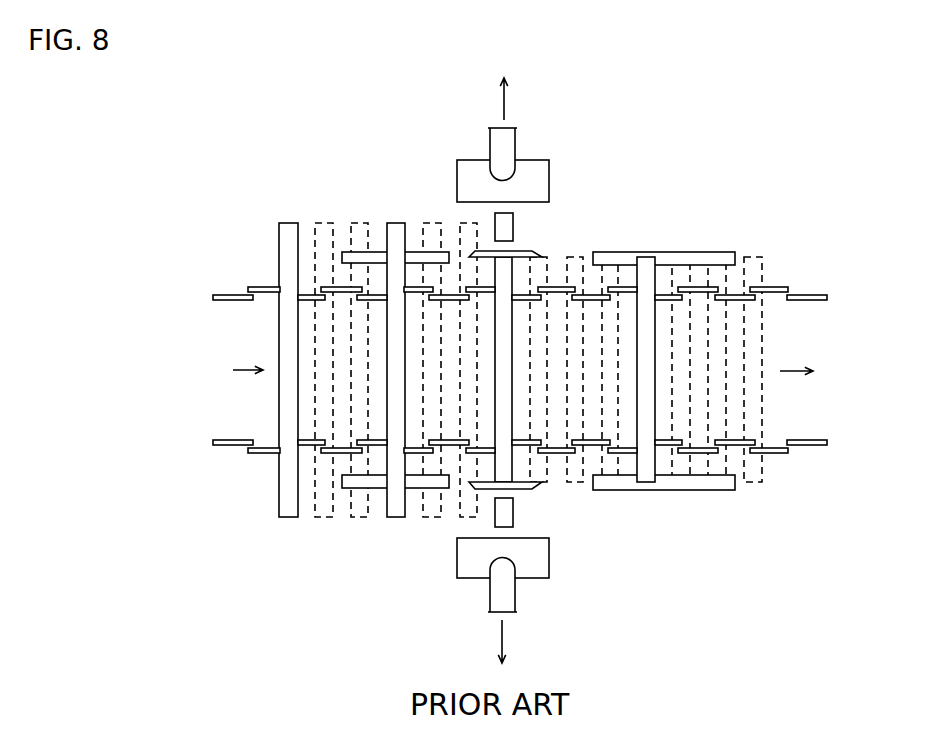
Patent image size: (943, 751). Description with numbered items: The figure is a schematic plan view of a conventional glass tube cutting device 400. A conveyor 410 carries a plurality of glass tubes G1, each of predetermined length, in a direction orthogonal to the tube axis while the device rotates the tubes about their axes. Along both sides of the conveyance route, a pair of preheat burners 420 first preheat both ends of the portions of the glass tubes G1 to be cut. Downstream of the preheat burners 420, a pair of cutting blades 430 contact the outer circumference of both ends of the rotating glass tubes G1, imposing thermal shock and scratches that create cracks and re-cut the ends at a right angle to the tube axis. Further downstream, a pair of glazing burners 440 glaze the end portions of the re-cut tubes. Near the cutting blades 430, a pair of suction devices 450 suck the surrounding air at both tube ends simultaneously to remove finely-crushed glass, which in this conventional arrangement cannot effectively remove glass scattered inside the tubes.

The glass tube cutting device 400 is at (282, 136).
The conveyor 410 is at (223, 281).
The preheat burners 420 is at (382, 242).
The cutting blades 430 is at (536, 244).
The glazing burners 440 is at (704, 244).
The suction devices 450 is at (556, 153).
The glass tube G1 is at (288, 235).